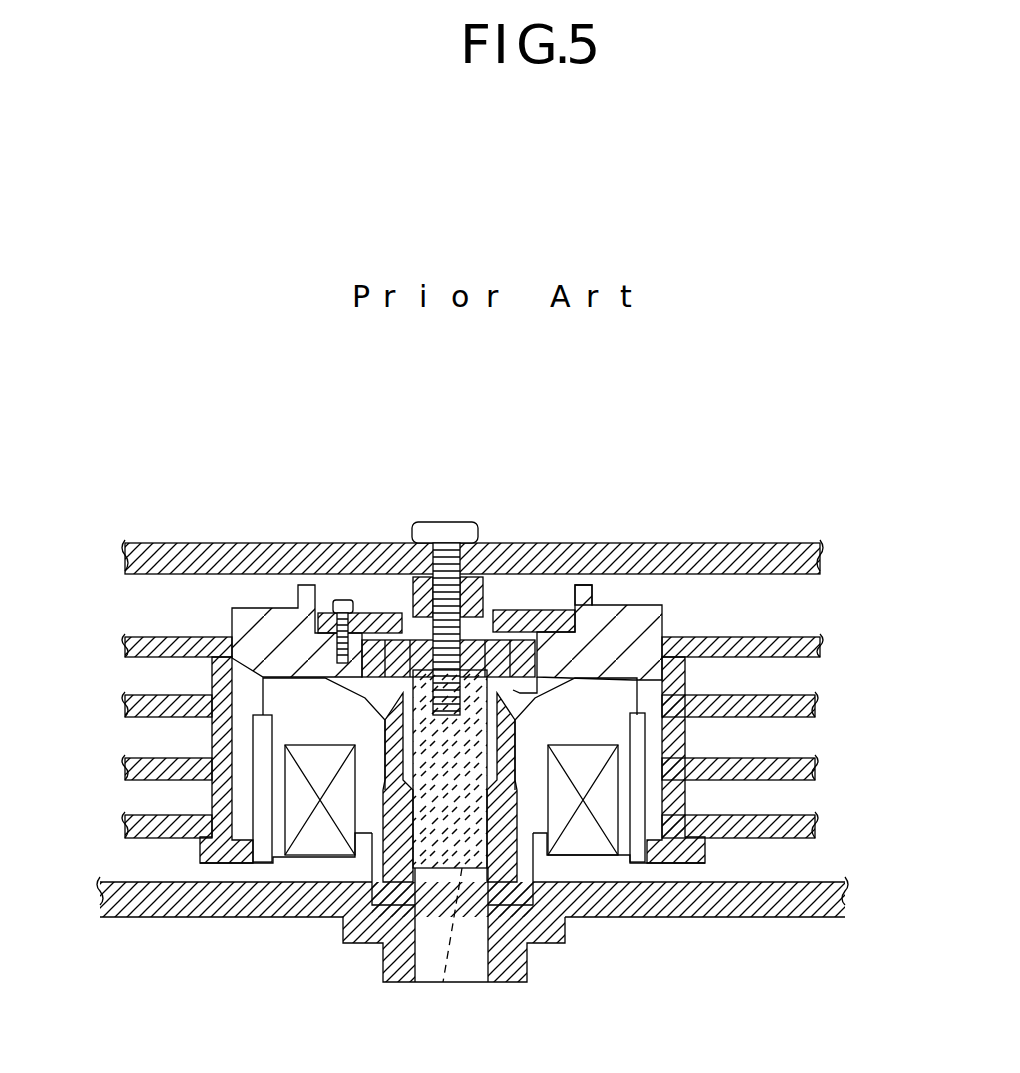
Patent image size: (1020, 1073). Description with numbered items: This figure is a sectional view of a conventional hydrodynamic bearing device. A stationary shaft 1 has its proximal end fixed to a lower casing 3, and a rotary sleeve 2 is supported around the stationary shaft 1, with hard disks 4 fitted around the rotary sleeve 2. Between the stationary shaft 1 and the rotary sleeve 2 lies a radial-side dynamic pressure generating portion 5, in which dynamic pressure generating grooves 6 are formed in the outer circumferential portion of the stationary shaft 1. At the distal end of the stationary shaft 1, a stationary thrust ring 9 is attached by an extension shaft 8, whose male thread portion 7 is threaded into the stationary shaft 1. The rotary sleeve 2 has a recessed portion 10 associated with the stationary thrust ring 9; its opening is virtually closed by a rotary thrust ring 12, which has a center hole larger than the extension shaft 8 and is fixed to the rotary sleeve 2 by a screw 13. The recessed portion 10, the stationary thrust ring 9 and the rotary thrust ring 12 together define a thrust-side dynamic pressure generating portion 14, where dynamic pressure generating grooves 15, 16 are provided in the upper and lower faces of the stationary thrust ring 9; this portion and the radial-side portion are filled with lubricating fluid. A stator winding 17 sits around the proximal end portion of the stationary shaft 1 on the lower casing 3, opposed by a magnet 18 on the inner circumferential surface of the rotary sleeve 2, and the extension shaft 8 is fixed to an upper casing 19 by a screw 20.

The stationary shaft 1 is at (470, 965).
The rotary sleeve 2 is at (633, 617).
The lower casing 3 is at (522, 968).
The hard disks 4 is at (793, 640).
The radial-side dynamic pressure generating portion 5 is at (405, 850).
The dynamic pressure generating grooves 6 is at (443, 985).
The male thread portion 7 is at (358, 613).
The extension shaft 8 is at (483, 605).
The stationary thrust ring 9 is at (497, 610).
The recessed portion 10 is at (245, 662).
The rotary thrust ring 12 is at (583, 590).
The screw 13 is at (302, 585).
The thrust-side dynamic pressure generating portion 14 is at (340, 600).
The dynamic pressure generating grooves 15 is at (537, 643).
The dynamic pressure generating grooves 16 is at (535, 693).
The stator winding 17 is at (317, 840).
The magnet 18 is at (263, 862).
The upper casing 19 is at (745, 555).
The screw 20 is at (450, 530).